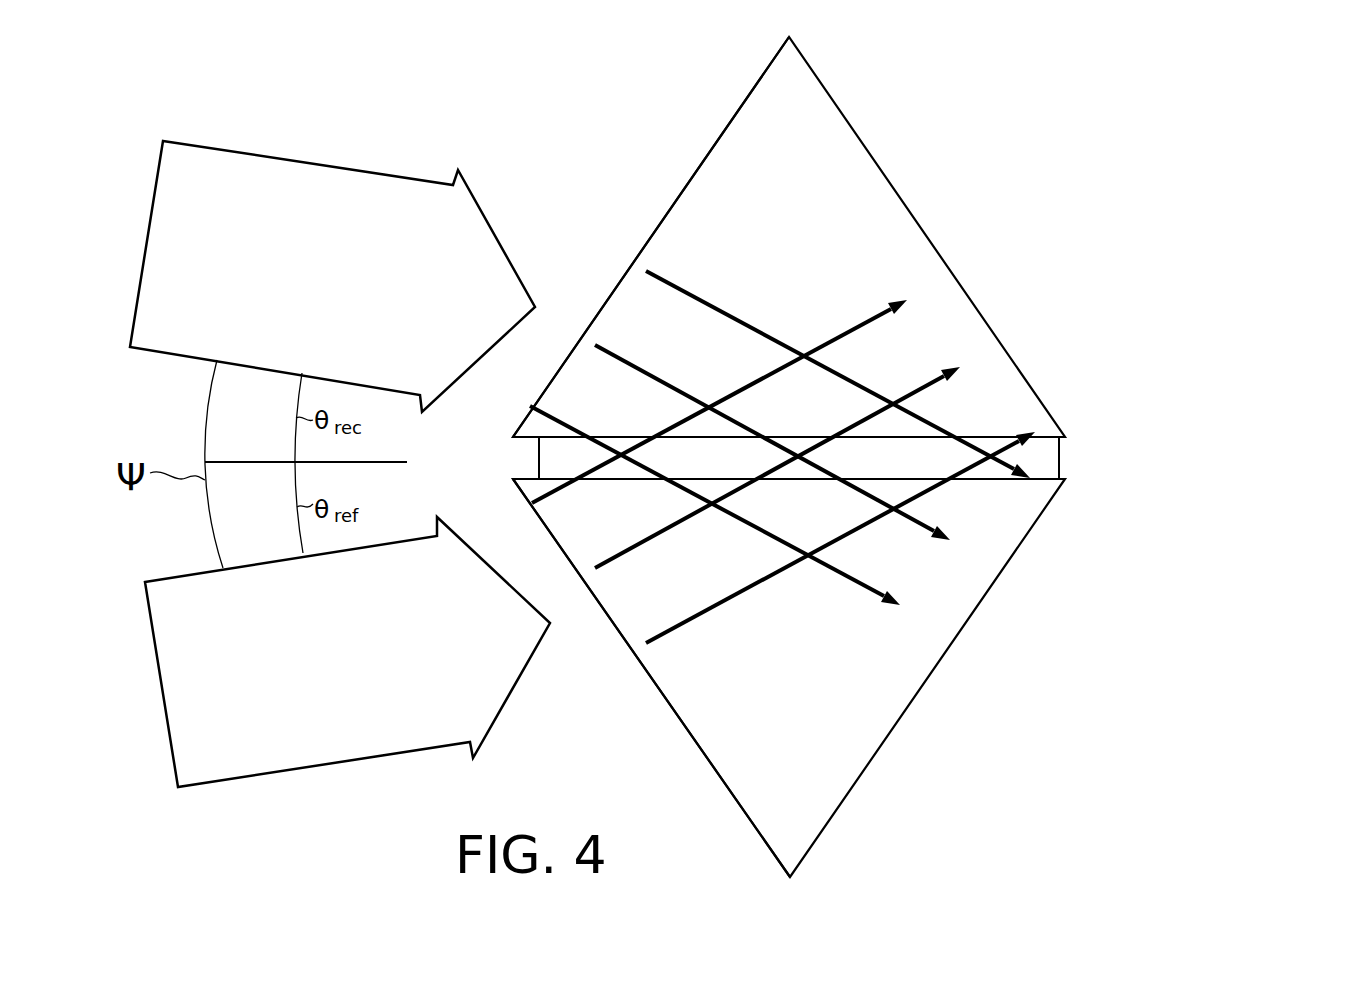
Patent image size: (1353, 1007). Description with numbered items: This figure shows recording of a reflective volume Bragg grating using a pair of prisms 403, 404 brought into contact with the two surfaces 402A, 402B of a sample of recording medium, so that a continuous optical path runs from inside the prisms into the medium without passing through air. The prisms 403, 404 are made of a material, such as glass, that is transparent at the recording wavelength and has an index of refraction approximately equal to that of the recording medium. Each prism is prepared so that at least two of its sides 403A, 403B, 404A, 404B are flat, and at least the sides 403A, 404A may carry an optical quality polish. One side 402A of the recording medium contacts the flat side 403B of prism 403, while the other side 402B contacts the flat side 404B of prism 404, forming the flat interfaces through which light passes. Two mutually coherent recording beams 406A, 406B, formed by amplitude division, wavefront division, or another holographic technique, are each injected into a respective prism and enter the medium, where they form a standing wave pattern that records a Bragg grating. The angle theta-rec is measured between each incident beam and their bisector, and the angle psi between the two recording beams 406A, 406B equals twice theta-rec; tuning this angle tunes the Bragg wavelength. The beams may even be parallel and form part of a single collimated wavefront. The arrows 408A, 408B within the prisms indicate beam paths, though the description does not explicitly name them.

The side of recording medium 402A is at (1045, 434).
The other side of recording medium 402B is at (1049, 482).
The prism 403 is at (847, 752).
The flat side of prism 403A is at (724, 784).
The flat side of prism 403B is at (532, 466).
The prism 404 is at (832, 170).
The flat side of prism 404A is at (731, 119).
The flat side of prism 404B is at (532, 440).
The recording beam 406A is at (347, 289).
The recording beam 406B is at (362, 670).
The reflected beam 408A is at (980, 348).
The reflected beam 408B is at (971, 562).